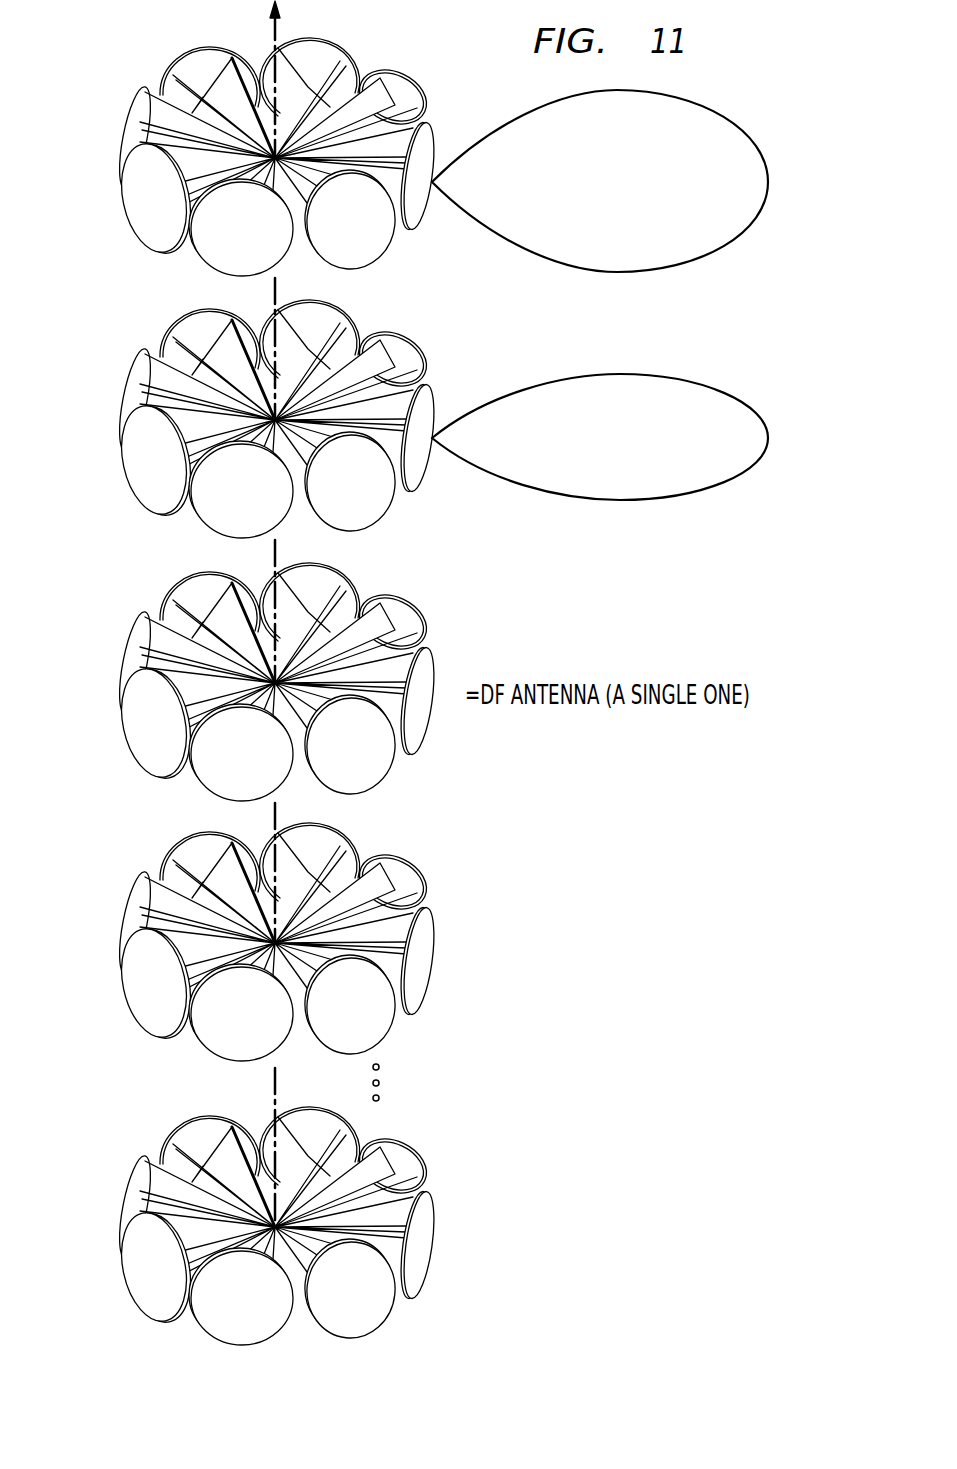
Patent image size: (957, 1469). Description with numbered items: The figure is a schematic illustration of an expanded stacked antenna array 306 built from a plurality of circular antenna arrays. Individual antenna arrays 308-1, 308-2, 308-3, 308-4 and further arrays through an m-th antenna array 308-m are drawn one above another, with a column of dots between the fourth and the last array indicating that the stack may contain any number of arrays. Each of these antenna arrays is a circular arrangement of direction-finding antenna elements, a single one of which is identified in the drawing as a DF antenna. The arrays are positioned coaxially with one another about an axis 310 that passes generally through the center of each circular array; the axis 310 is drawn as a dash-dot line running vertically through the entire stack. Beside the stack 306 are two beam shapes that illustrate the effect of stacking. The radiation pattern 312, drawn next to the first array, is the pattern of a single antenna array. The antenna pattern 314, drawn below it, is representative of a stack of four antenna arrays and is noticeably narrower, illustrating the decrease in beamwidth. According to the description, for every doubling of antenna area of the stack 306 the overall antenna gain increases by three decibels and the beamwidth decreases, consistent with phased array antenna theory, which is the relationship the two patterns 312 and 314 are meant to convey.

The expanded stacked antenna array 306 is at (122, 66).
The antenna array 308-1 is at (138, 208).
The antenna array 308-2 is at (241, 419).
The antenna array 308-3 is at (241, 682).
The antenna array 308-4 is at (241, 942).
The antenna array 308-m is at (236, 1226).
The axis 310 is at (272, 35).
The radiation pattern 312 is at (768, 182).
The antenna pattern 314 is at (768, 438).